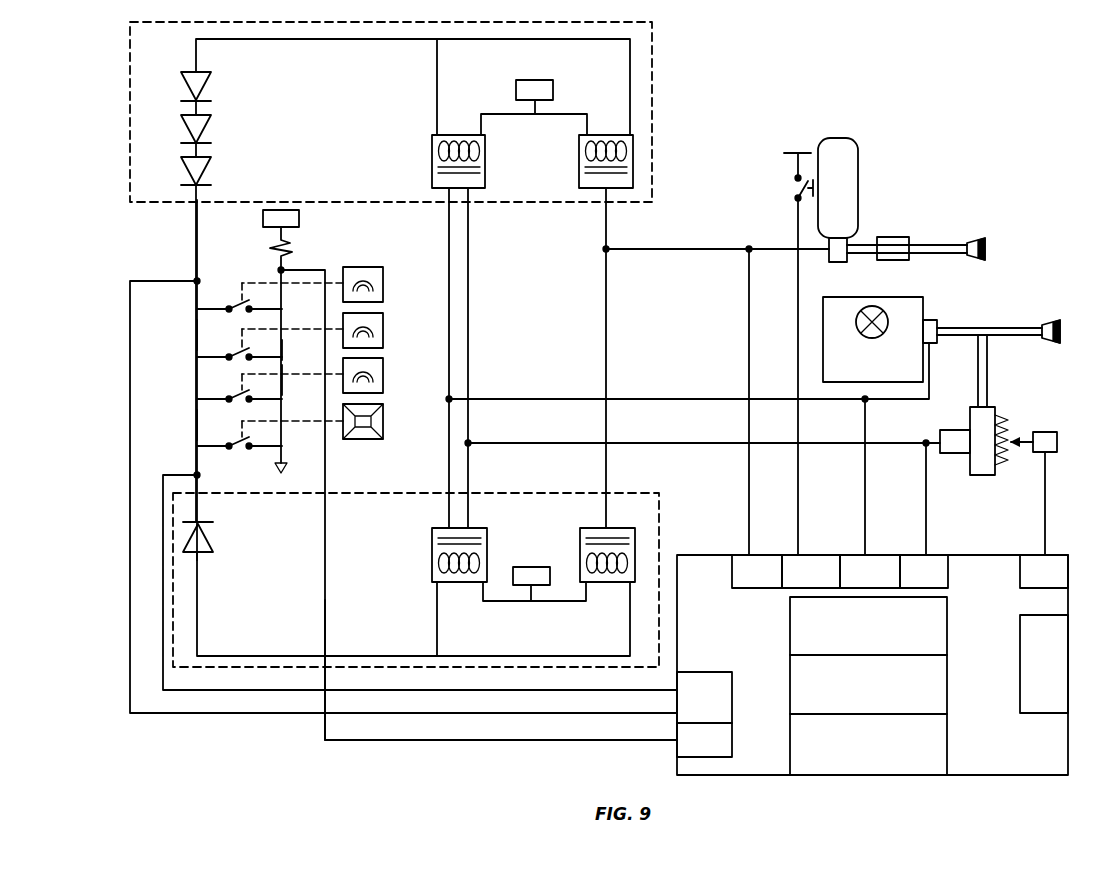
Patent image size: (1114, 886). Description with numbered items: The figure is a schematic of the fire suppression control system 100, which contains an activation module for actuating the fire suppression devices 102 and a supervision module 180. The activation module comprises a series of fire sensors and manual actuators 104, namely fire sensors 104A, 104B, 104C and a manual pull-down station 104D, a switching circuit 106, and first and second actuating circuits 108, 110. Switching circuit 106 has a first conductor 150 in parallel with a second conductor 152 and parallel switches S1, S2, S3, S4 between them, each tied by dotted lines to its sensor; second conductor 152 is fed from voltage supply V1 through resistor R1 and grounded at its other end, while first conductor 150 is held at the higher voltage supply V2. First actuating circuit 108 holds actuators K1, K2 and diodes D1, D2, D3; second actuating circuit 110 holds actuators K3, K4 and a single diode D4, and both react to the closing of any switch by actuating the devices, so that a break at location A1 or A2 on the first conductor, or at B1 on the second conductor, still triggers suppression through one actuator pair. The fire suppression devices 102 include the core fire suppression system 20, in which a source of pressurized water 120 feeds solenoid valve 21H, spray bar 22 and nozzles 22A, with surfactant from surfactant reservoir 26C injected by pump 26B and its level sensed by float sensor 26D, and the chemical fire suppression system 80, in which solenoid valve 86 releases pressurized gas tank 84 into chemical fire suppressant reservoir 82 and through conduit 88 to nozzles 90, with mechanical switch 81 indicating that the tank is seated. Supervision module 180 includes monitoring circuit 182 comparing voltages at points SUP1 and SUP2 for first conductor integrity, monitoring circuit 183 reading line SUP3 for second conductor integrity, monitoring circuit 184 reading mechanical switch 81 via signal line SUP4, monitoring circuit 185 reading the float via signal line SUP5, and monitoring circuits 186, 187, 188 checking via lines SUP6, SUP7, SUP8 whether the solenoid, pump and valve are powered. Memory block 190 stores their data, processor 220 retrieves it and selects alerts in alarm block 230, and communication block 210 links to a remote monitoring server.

The fire suppression control system 100 is at (805, 88).
The fire suppression devices 102 is at (1030, 222).
The series of fire sensors and manual actuators 104 is at (385, 347).
The fire sensor 104A is at (384, 285).
The fire sensor 104B is at (384, 330).
The fire sensor 104C is at (384, 373).
The manual actuator 104D is at (384, 422).
The switching circuit 106 is at (233, 266).
The first actuating circuit 108 is at (128, 60).
The second actuating circuit 110 is at (237, 668).
The source of pressurized water 120 is at (895, 305).
The first conductor 150 is at (196, 257).
The second conductor 152 is at (283, 384).
The supervision module 180 is at (872, 697).
The monitoring circuit 182 is at (704, 697).
The monitoring circuit 183 is at (704, 740).
The monitoring circuit 184 is at (811, 571).
The monitoring circuit 185 is at (1044, 571).
The monitoring circuit 186 is at (757, 571).
The monitoring circuit 187 is at (924, 571).
The monitoring circuit 188 is at (870, 571).
The memory block 190 is at (868, 744).
The communication block 210 is at (1044, 664).
The processor 220 is at (868, 684).
The alarm block 230 is at (868, 626).
The core fire suppression system 20 is at (1015, 331).
The solenoid valve 21H is at (932, 326).
The spray bar 22 is at (1003, 328).
The nozzles 22A is at (1050, 326).
The pump 26B is at (957, 452).
The surfactant reservoir 26C is at (985, 416).
The float sensor 26D is at (1047, 436).
The chemical fire suppression system 80 is at (916, 202).
The mechanical switch 81 is at (792, 188).
The chemical fire suppressant reservoir 82 is at (895, 248).
The pressurized gas tank 84 is at (846, 164).
The solenoid valve 86 is at (838, 262).
The conduit 88 is at (937, 249).
The nozzles 90 is at (972, 245).
The diode D1 is at (182, 86).
The diode D2 is at (182, 128).
The diode D3 is at (182, 170).
The diode D4 is at (213, 540).
The voltage supply V1 is at (288, 215).
The voltage supply V2 is at (535, 90).
The resistor R1 is at (296, 240).
The switch S1 is at (239, 299).
The switch S2 is at (239, 347).
The switch S3 is at (239, 389).
The switch S4 is at (239, 436).
The break location A1 is at (197, 340).
The break location A2 is at (197, 428).
The break location B1 is at (275, 343).
The actuator K1 is at (480, 170).
The actuator K2 is at (590, 170).
The actuator K3 is at (478, 538).
The actuator K4 is at (590, 540).
The monitoring point SUP1 is at (403, 497).
The monitoring point SUP2 is at (419, 582).
The line SUP3 is at (500, 670).
The signal line SUP4 is at (785, 376).
The signal line SUP5 is at (1032, 503).
The signal line SUP6 is at (736, 402).
The signal line SUP7 is at (913, 499).
The signal line SUP8 is at (852, 477).